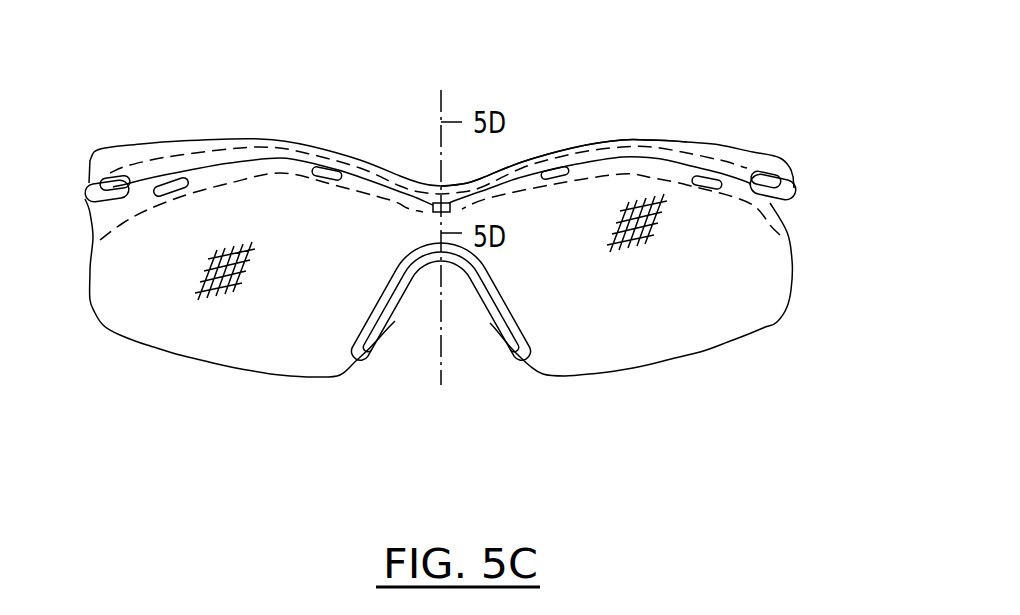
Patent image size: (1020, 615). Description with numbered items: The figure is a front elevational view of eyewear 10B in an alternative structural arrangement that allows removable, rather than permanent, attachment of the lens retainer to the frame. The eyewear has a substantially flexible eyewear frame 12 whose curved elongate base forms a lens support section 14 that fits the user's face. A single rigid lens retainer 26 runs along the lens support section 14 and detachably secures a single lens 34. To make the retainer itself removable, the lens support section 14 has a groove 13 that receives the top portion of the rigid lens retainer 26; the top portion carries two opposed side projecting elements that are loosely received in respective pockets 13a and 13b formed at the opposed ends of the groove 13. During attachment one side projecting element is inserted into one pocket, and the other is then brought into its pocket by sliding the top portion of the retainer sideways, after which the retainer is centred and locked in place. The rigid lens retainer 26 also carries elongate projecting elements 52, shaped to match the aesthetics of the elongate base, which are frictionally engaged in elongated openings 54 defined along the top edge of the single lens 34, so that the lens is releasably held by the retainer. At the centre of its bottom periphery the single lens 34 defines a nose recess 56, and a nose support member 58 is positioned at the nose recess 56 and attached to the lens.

The eyewear 10B is at (537, 127).
The substantially flexible eyewear frame 12 is at (370, 164).
The groove 13 is at (631, 139).
The pocket 13a is at (88, 190).
The pocket 13b is at (797, 190).
The lens support section 14 is at (143, 145).
The rigid lens retainer 26 is at (773, 215).
The single lens 34 is at (321, 299).
The projecting elements 52 is at (714, 180).
The openings 54 is at (692, 176).
The nose recess 56 is at (394, 320).
The nose support member 58 is at (512, 352).